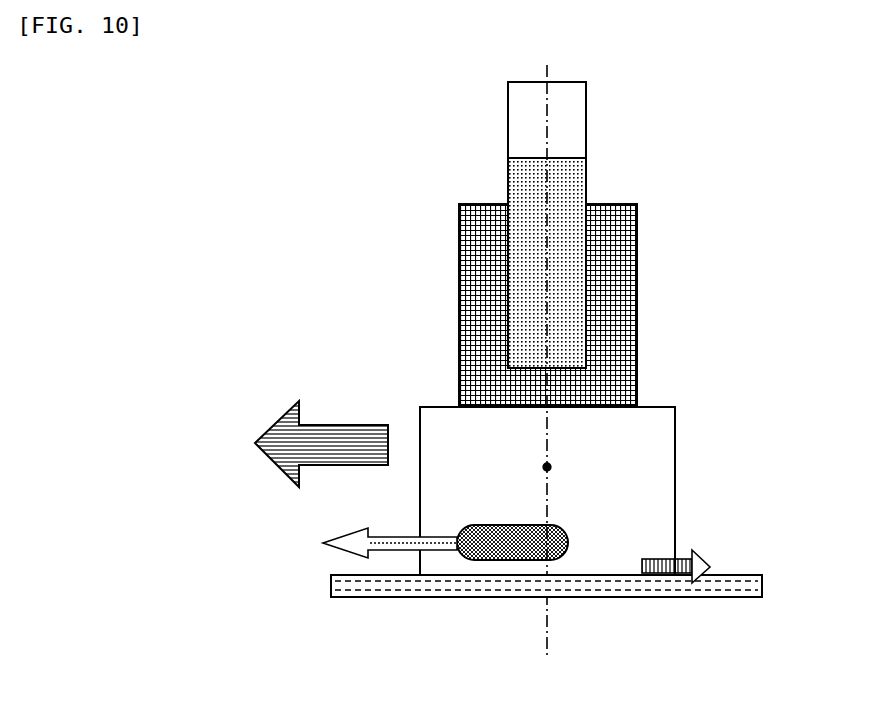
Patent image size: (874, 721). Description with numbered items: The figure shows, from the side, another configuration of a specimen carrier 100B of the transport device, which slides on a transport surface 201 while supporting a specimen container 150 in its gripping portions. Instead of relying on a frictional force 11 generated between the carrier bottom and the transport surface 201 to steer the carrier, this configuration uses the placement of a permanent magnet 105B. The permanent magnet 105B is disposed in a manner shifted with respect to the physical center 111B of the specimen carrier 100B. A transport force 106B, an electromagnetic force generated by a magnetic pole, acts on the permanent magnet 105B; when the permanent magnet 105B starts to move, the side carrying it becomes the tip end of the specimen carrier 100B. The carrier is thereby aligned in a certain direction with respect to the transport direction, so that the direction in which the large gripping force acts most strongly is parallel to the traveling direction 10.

The specimen container 150 is at (586, 142).
The specimen carrier 100B is at (435, 405).
The physical center 111B is at (547, 467).
The permanent magnet 105B is at (547, 525).
The transport force 106B is at (325, 542).
The traveling direction 10 is at (275, 467).
The transport surface 201 is at (500, 597).
The frictional force 11 is at (685, 578).